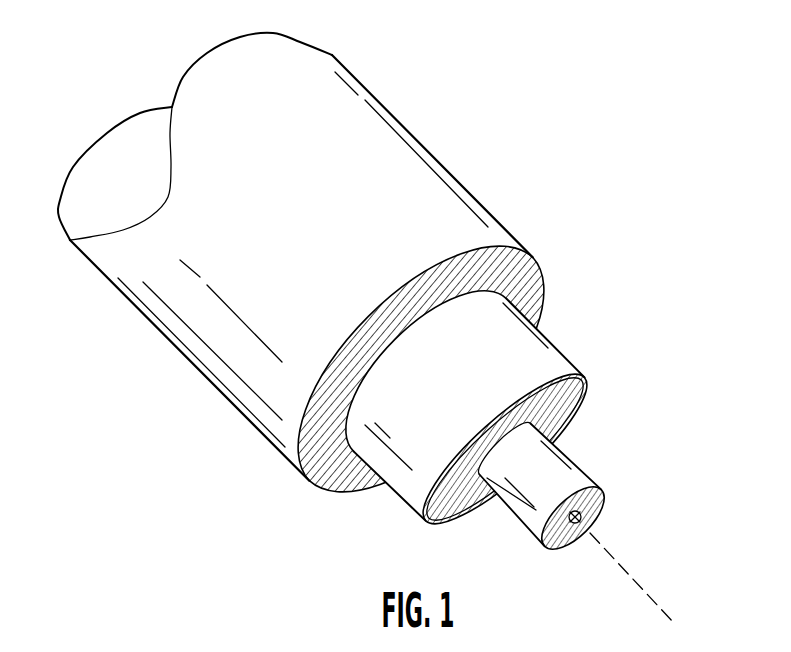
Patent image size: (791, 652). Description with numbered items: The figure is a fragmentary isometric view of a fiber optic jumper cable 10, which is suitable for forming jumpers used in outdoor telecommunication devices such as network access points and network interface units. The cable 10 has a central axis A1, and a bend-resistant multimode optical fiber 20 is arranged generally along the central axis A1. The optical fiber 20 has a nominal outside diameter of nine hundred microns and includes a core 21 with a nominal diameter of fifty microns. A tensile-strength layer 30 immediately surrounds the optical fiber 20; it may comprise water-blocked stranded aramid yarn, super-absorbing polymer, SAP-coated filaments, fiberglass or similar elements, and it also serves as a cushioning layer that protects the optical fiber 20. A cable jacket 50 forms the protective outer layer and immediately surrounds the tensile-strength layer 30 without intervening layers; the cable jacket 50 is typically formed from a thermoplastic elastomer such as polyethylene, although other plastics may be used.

The fiber optic jumper cable 10 is at (352, 274).
The cable jacket 50 is at (443, 200).
The tensile-strength layer 30 is at (535, 350).
The bend-resistant multimode optical fiber 20 is at (583, 472).
The core 21 is at (588, 512).
The central axis A1 is at (637, 583).